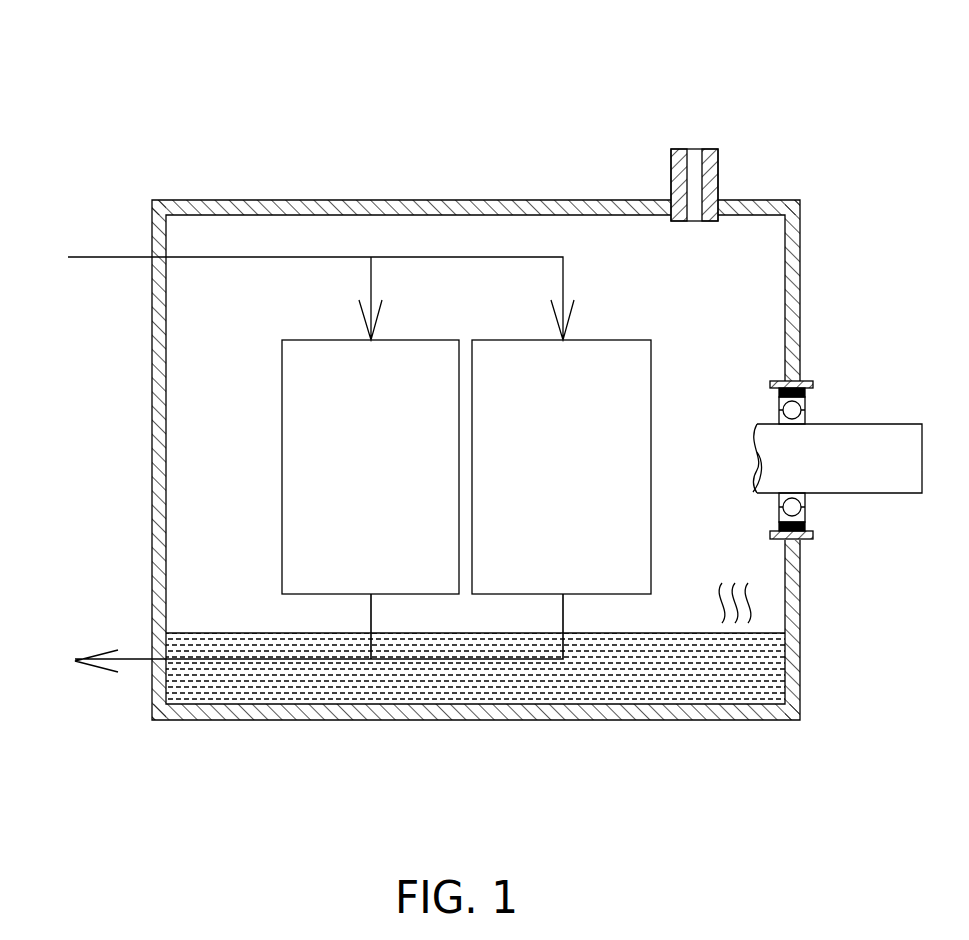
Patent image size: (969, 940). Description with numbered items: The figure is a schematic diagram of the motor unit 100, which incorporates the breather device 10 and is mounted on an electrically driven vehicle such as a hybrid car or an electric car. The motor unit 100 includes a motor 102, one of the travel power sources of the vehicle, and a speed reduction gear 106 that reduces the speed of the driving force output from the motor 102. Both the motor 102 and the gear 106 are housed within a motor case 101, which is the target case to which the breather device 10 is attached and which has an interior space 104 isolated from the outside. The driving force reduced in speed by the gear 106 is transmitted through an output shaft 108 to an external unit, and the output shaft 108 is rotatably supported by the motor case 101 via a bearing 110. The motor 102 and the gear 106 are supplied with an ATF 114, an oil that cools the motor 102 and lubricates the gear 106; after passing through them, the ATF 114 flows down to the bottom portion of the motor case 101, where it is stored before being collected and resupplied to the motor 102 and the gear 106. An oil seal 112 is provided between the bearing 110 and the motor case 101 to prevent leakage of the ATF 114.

The motor unit 100 is at (213, 117).
The breather device 10 is at (718, 158).
The motor case 101 is at (152, 357).
The motor 102 is at (281, 468).
The interior space 104 is at (707, 497).
The speed reduction gear 106 is at (605, 340).
The output shaft 108 is at (857, 493).
The bearing 110 is at (805, 405).
The oil seal 112 is at (802, 381).
The ATF 114 is at (645, 677).